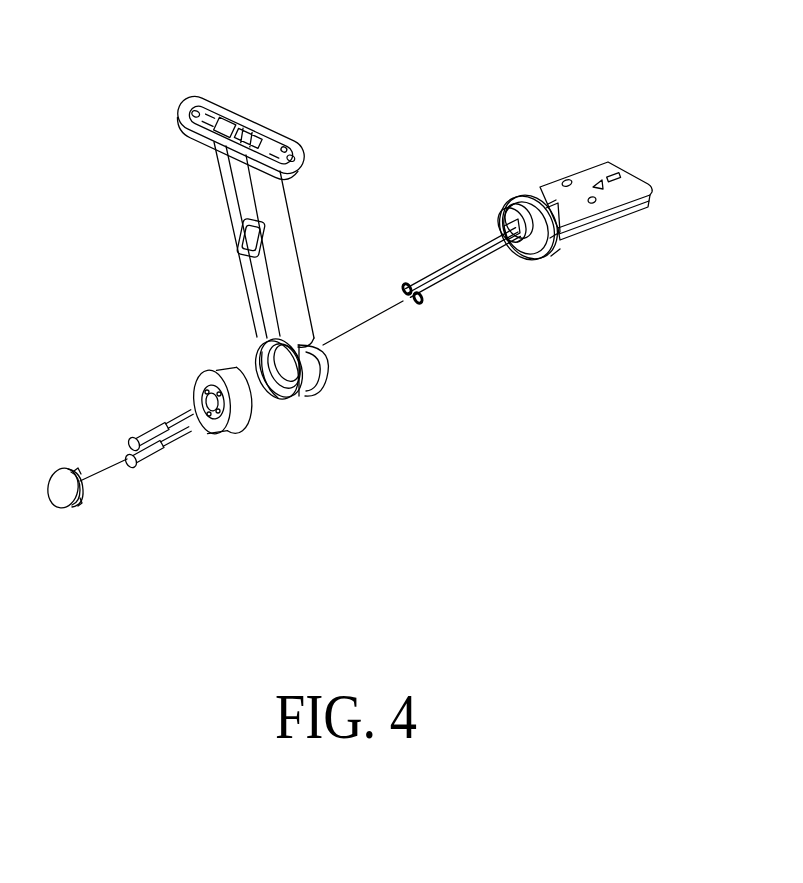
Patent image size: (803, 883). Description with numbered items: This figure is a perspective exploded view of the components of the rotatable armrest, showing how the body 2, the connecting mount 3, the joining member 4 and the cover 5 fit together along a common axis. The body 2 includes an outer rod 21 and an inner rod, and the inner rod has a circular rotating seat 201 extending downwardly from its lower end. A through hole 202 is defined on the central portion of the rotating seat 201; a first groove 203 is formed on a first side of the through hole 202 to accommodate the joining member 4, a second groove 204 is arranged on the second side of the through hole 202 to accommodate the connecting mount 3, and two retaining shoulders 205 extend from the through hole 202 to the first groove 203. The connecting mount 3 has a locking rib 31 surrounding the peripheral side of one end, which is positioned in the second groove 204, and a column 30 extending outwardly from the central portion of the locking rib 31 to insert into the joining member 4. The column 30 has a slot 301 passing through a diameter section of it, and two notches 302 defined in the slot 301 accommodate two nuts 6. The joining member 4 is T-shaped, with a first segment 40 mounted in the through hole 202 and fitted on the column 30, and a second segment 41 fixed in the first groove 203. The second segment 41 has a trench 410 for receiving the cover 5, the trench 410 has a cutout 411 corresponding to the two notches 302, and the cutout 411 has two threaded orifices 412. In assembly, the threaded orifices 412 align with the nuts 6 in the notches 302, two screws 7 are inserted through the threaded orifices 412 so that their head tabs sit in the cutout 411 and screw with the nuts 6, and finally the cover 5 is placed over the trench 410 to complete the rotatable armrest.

The body 2 is at (415, 87).
The outer rod 21 is at (276, 227).
The circular rotating seat 201 is at (303, 397).
The through hole 202 is at (302, 390).
The first groove 203 is at (258, 370).
The second groove 204 is at (292, 355).
The retaining shoulders 205 is at (297, 397).
The connecting mount 3 is at (600, 168).
The column 30 is at (505, 210).
The slot 301 is at (540, 240).
The notches 302 is at (532, 245).
The locking rib 31 is at (508, 200).
The joining member 4 is at (187, 405).
The first segment 40 is at (230, 377).
The second segment 41 is at (212, 390).
The trench 410 is at (197, 407).
The cutout 411 is at (215, 432).
The threaded orifices 412 is at (203, 398).
The cover 5 is at (70, 508).
The nuts 6 is at (420, 304).
The screws 7 is at (140, 466).